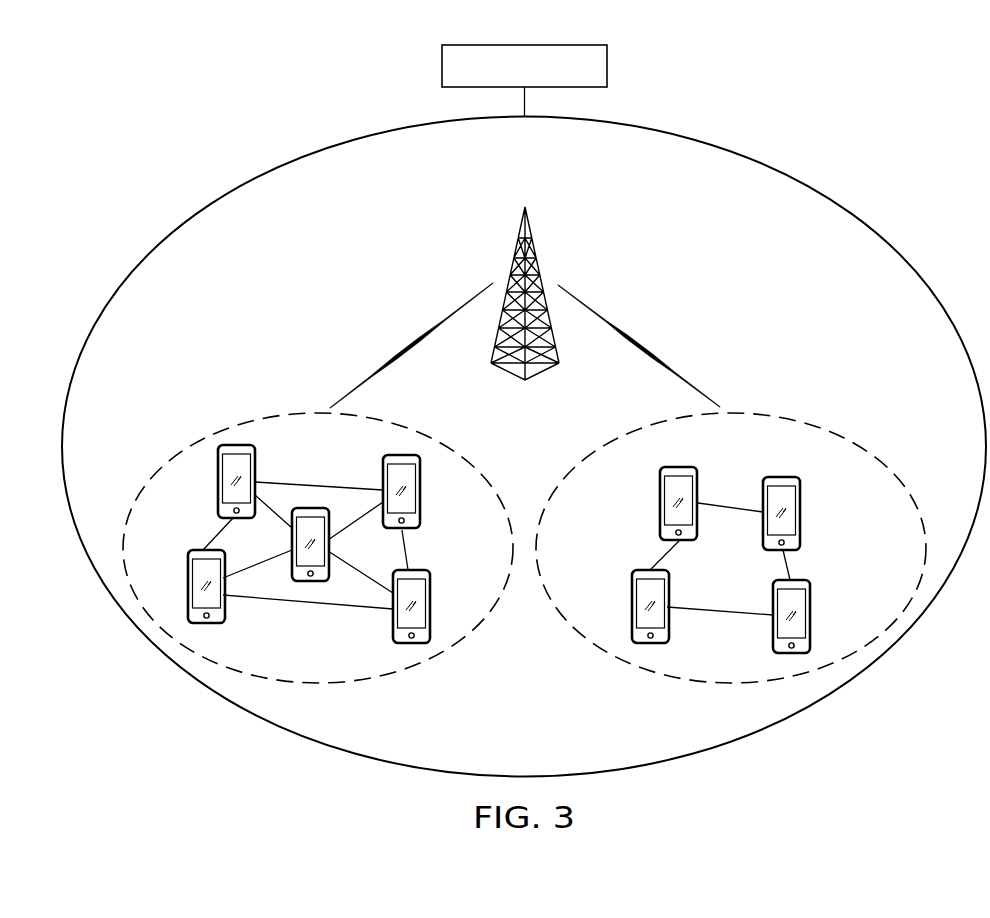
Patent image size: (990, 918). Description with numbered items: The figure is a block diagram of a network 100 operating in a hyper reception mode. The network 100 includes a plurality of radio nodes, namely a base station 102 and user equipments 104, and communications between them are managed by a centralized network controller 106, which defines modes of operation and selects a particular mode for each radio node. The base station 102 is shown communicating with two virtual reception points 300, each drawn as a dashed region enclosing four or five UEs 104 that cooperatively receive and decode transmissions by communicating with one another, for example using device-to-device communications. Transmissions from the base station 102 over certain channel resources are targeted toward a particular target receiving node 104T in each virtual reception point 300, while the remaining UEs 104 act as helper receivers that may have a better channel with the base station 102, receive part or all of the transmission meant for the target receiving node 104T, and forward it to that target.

The network 100 is at (822, 187).
The base station 102 is at (538, 262).
The user equipment 104 is at (199, 549).
The target receiving node 104T is at (305, 582).
The centralized network controller 106 is at (442, 65).
The virtual reception point 300 is at (206, 433).